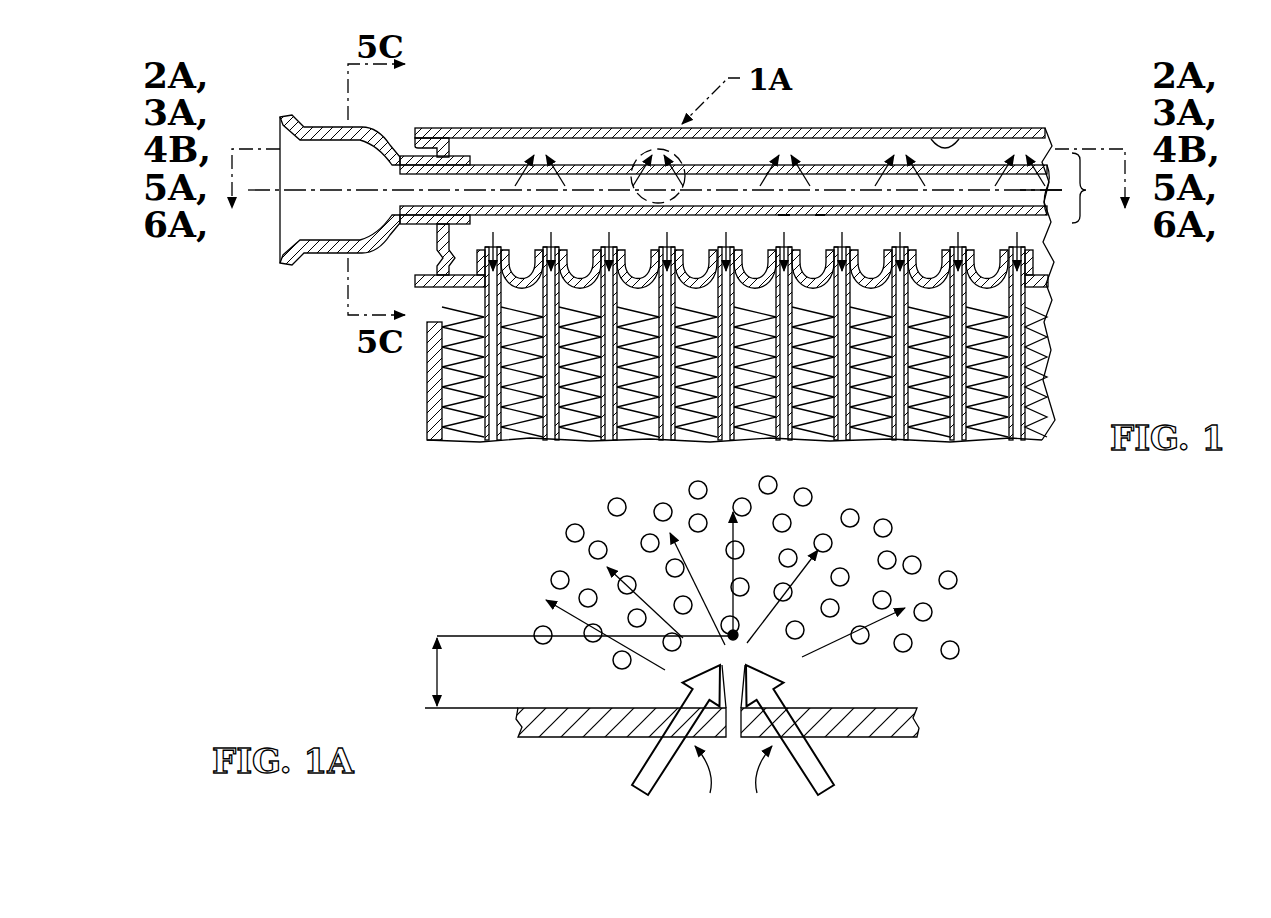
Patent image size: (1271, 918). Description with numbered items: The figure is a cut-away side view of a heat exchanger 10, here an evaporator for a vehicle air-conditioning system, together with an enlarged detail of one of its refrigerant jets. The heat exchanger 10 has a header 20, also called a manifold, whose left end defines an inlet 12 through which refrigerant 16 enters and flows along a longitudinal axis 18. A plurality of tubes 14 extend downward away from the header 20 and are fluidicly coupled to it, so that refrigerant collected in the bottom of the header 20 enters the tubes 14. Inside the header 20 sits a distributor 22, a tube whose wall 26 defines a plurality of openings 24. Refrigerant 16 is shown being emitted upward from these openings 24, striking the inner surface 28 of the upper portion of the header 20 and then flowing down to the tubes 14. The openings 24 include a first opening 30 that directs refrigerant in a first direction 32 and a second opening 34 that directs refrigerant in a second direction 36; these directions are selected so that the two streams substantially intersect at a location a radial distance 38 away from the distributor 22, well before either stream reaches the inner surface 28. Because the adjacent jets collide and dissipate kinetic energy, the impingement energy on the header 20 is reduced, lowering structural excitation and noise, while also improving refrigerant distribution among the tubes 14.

In FIG. 1, the heat exchanger 10 is at (1034, 102).
In FIG. 1, the inlet 12 is at (286, 212).
In FIG. 1, the tubes 14 is at (902, 312).
In FIG. 1, the refrigerant 16 is at (787, 237).
In FIG. 1A, the refrigerant 16 is at (535, 533).
In FIG. 1, the longitudinal axis 18 is at (1023, 192).
In FIG. 1, the header 20 is at (514, 126).
In FIG. 1, the distributor 22 is at (1095, 188).
In FIG. 1A, the distributor 22 is at (890, 708).
In FIG. 1, the openings 24 is at (640, 152).
In FIG. 1, the wall 26 is at (958, 170).
In FIG. 1A, the wall 26 is at (917, 717).
In FIG. 1, the inner surface 28 is at (952, 138).
In FIG. 1A, the first opening 30 is at (709, 785).
In FIG. 1A, the first direction 32 is at (640, 768).
In FIG. 1A, the second opening 34 is at (758, 785).
In FIG. 1A, the second direction 36 is at (828, 765).
In FIG. 1A, the radial distance 38 is at (430, 661).